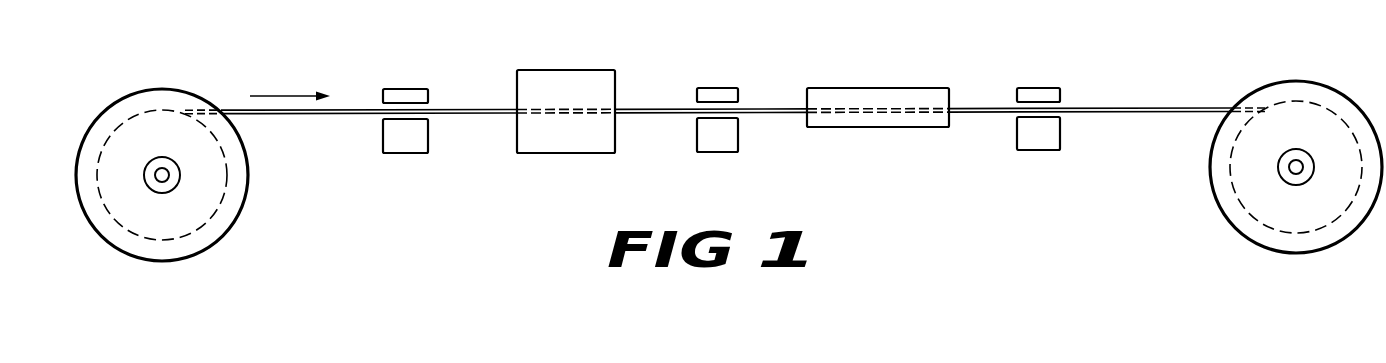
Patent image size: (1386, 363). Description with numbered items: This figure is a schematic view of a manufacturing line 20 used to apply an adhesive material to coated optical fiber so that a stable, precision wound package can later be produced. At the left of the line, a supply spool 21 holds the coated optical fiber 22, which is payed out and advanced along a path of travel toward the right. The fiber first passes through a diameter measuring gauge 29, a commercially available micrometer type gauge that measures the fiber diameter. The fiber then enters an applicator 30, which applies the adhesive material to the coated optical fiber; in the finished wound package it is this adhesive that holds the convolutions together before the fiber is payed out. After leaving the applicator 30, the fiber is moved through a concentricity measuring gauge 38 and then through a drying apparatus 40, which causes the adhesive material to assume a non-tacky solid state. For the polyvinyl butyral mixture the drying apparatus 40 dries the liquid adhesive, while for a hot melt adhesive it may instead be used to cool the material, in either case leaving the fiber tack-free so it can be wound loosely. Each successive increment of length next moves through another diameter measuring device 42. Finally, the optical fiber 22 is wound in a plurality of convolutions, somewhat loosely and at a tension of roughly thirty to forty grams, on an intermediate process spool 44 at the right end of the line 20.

The manufacturing line 20 is at (681, 60).
The supply spool 21 is at (184, 262).
The optical fiber 22 is at (329, 116).
The diameter measuring gauge 29 is at (412, 155).
The applicator 30 is at (563, 155).
The concentricity measuring gauge 38 is at (713, 153).
The drying apparatus 40 is at (858, 128).
The diameter measuring device 42 is at (1028, 151).
The process spool 44 is at (1272, 252).